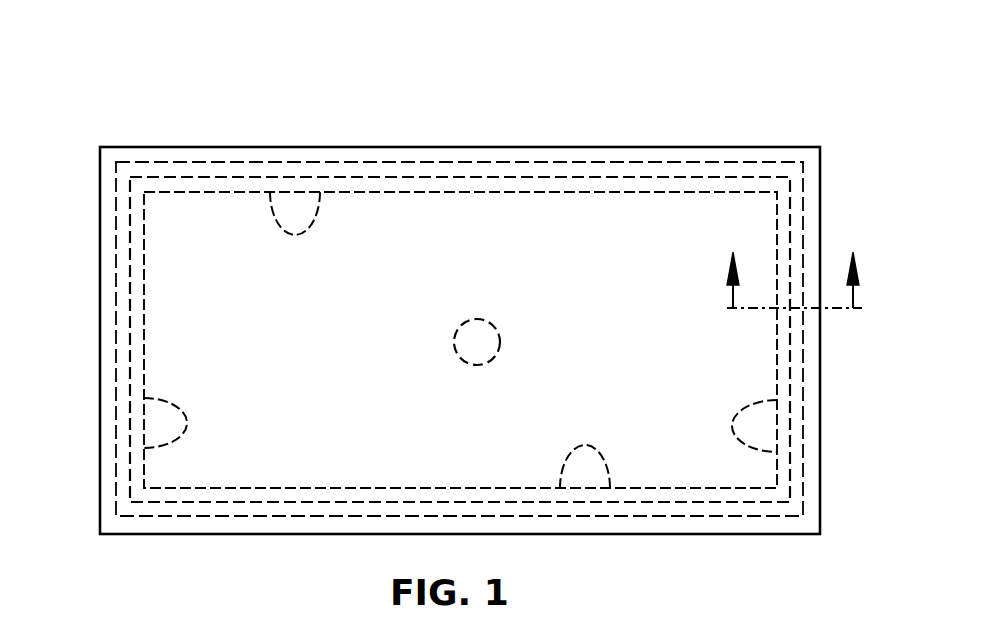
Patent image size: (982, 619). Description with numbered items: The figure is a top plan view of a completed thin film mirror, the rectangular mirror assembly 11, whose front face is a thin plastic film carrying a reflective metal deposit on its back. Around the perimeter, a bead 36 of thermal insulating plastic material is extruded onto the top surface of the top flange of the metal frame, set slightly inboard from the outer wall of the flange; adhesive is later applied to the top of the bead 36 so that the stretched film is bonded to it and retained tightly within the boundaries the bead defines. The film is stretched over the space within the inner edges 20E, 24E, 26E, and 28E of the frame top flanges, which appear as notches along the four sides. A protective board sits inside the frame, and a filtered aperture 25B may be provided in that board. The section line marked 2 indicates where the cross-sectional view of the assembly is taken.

The rectangular mirror assembly 11 is at (748, 80).
The bead 36 is at (521, 177).
The inner edge 24E is at (319, 190).
The inner edge 28E is at (611, 488).
The inner edge 26E is at (146, 448).
The inner edge 20E is at (777, 452).
The filtered aperture 25B is at (499, 342).
The section line 2- 2 is at (794, 266).